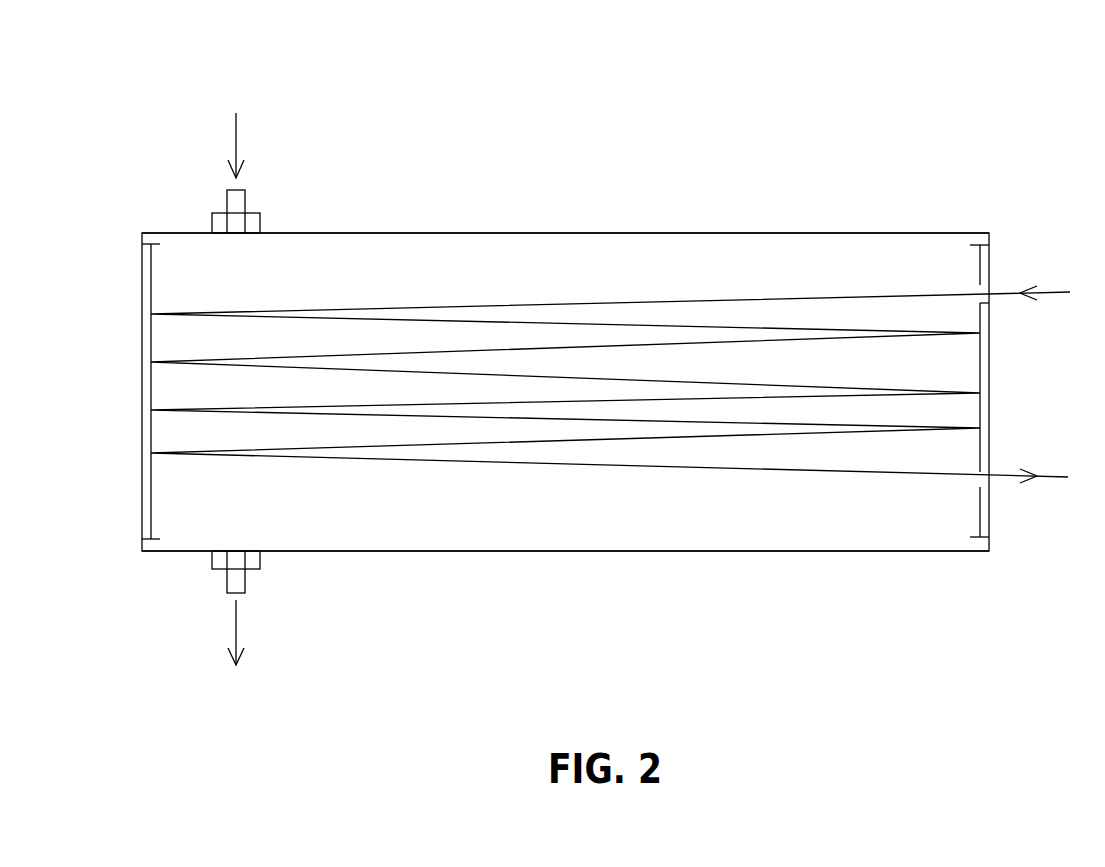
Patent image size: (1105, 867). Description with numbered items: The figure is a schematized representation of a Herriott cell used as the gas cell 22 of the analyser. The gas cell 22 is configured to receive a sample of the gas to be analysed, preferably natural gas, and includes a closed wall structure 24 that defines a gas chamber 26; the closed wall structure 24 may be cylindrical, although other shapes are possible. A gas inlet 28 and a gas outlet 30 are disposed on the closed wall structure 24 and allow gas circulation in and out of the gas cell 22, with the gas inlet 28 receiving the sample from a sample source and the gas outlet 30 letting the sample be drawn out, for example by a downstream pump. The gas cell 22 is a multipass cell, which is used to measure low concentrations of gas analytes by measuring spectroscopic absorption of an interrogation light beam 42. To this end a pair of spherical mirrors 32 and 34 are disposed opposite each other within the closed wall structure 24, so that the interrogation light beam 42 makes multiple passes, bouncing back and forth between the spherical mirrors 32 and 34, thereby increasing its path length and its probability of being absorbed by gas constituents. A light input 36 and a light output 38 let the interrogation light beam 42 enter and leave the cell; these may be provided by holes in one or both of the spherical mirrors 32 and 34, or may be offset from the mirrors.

The gas cell 22 is at (783, 212).
The closed wall structure 24 is at (588, 232).
The gas chamber 26 is at (345, 522).
The gas inlet 28 is at (245, 198).
The gas outlet 30 is at (245, 583).
The spherical mirror 32 is at (989, 263).
The spherical mirror 34 is at (151, 283).
The light input 36 is at (990, 303).
The light output 38 is at (980, 472).
The interrogation light beam 42 is at (740, 469).